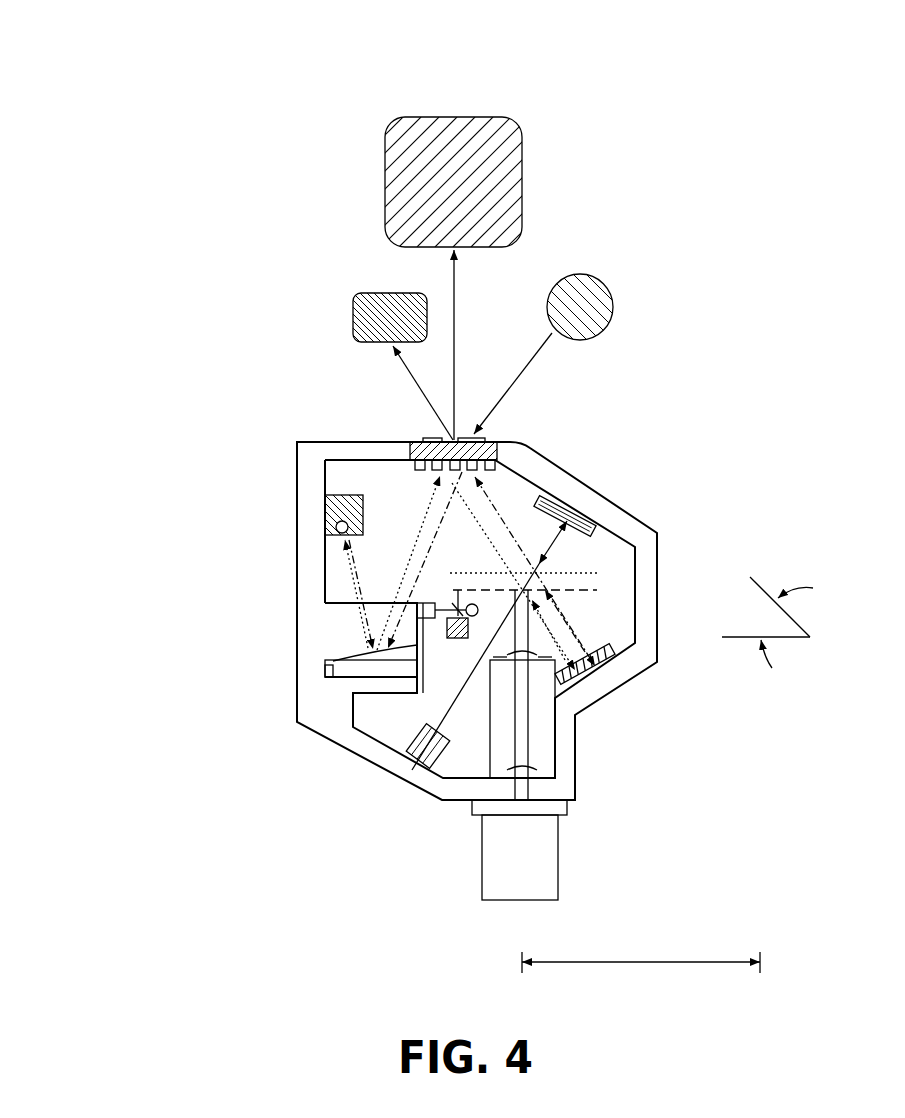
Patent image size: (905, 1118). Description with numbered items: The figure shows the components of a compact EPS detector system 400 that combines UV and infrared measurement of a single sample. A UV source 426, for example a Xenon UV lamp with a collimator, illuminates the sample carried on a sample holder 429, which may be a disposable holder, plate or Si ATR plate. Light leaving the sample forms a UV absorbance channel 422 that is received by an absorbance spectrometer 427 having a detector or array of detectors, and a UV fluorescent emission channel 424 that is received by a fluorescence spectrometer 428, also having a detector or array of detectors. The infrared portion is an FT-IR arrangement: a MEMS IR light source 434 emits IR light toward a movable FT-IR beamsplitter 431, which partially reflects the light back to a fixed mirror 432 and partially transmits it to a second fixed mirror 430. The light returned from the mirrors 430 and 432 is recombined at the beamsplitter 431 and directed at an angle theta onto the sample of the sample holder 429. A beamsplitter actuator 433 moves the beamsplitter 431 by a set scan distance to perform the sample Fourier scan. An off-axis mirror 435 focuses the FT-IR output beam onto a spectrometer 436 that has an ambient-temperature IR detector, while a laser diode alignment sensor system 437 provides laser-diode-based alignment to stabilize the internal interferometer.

The compact EPS detector system 400 is at (177, 77).
The UV absorbance channel 422 is at (456, 292).
The UV fluorescent emission channel 424 is at (413, 381).
The UV source 426 is at (585, 276).
The absorbance spectrometer 427 is at (455, 117).
The fluorescence spectrometer 428 is at (395, 293).
The sample holder 429 is at (492, 440).
The FT-IR fixed mirror 430 is at (568, 498).
The movable FT-IR beamsplitter 431 is at (562, 568).
The FT-IR fixed mirror 432 is at (582, 678).
The beamsplitter actuator 433 is at (583, 722).
The MEMS IR light source 434 is at (420, 768).
The off-axis mirror 435 is at (325, 668).
The spectrometer 436 is at (325, 520).
The laser diode alignment sensor system 437 is at (423, 695).